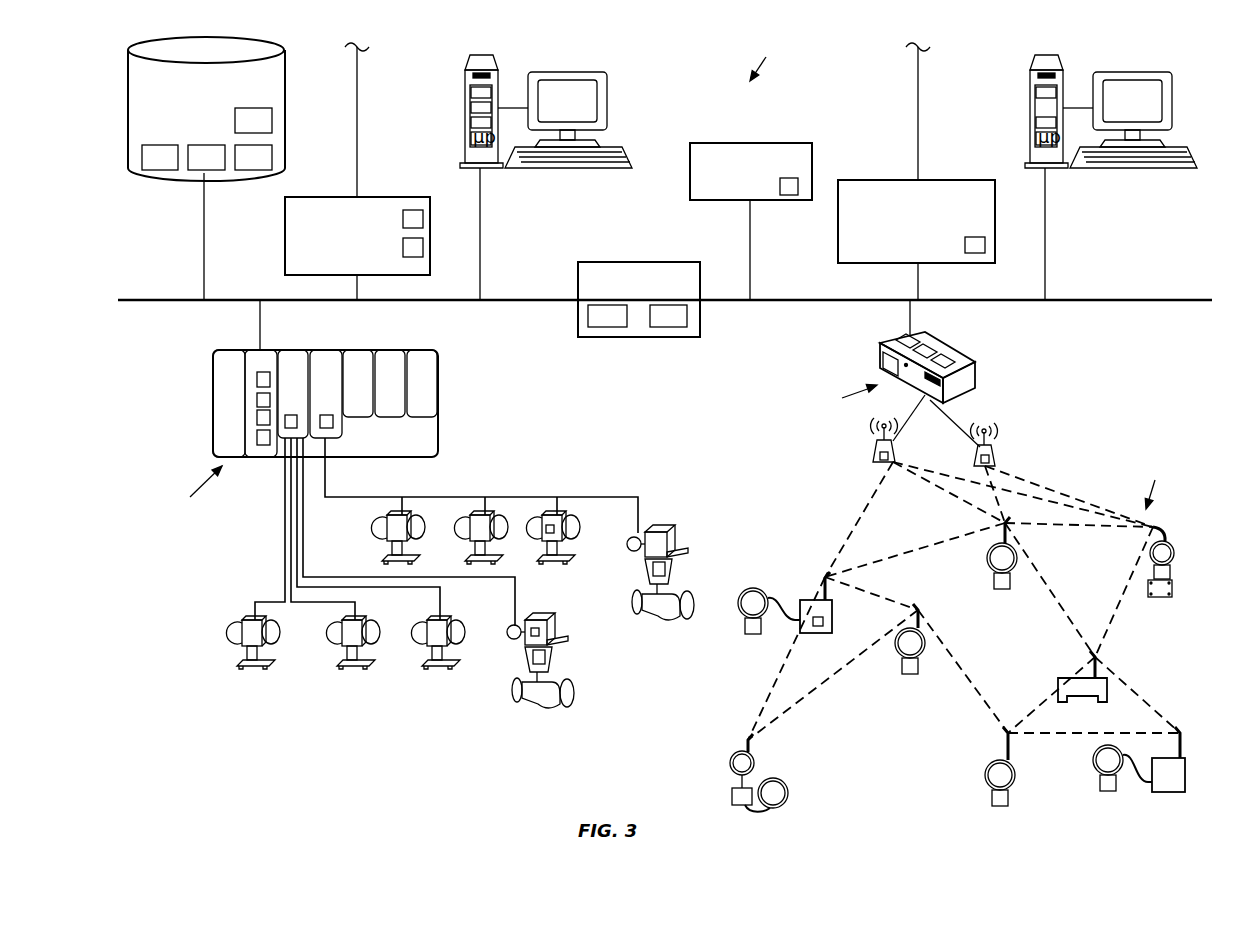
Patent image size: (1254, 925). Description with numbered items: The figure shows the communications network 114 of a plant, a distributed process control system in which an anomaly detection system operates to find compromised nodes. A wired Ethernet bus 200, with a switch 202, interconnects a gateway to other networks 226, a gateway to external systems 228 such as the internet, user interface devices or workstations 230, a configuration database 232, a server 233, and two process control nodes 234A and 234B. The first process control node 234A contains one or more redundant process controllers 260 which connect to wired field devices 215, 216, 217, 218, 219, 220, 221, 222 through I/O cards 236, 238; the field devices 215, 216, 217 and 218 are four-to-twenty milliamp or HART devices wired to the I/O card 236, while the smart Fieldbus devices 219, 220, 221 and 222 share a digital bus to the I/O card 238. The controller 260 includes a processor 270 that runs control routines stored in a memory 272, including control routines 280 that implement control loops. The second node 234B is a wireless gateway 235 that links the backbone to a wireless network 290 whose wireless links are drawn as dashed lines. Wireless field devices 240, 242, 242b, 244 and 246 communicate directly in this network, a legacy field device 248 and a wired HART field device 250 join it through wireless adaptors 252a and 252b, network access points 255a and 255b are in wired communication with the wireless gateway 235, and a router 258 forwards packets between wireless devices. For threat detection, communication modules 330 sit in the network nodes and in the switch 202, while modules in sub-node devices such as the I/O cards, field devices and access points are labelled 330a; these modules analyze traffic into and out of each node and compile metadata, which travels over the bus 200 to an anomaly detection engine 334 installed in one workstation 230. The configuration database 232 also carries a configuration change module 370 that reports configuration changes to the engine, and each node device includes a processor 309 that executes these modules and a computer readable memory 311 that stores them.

The communications network 114 is at (768, 57).
The wired Ethernet bus 200 is at (532, 305).
The switch 202 is at (645, 262).
The wired field device 215 is at (253, 655).
The wired field device 216 is at (350, 655).
The wired field device 217 is at (437, 655).
The wired field device 218 is at (525, 655).
The wired field device 219 is at (405, 515).
The wired field device 220 is at (490, 515).
The wired field device 221 is at (560, 515).
The wired field device 222 is at (662, 525).
The gateway to other networks 226 is at (382, 197).
The gateway to external systems 228 is at (884, 180).
The user interface device or workstation 230 is at (821, 177).
The configuration database 232 is at (206, 152).
The server 233 is at (771, 143).
The first process control node 234A is at (303, 408).
The second process control node 234B is at (925, 383).
The wireless gateway 235 is at (977, 375).
The I/O card 236 is at (295, 368).
The I/O card 238 is at (325, 365).
The wireless field device 240 is at (790, 793).
The wireless field device 242 is at (895, 662).
The wireless field device 242b is at (985, 572).
The wireless field device 244 is at (957, 780).
The wireless field device 246 is at (1172, 588).
The field device 248 is at (735, 627).
The field device 250 is at (1093, 766).
The wireless adaptor 252a is at (832, 613).
The wireless adaptor 252b is at (1185, 775).
The network access point 255a is at (873, 447).
The network access point 255b is at (992, 447).
The router 258 is at (1085, 702).
The process controller 260 is at (222, 408).
The processor 270 is at (255, 378).
The memory 272 is at (255, 400).
The control routine 280 is at (258, 445).
The wireless network 290 is at (964, 598).
The processor 309 is at (155, 172).
The computer readable memory 311 is at (200, 172).
The communication module 330 is at (272, 120).
The communication module 330a is at (298, 428).
The anomaly detection engine 334 is at (470, 106).
The configuration change module 370 is at (250, 172).